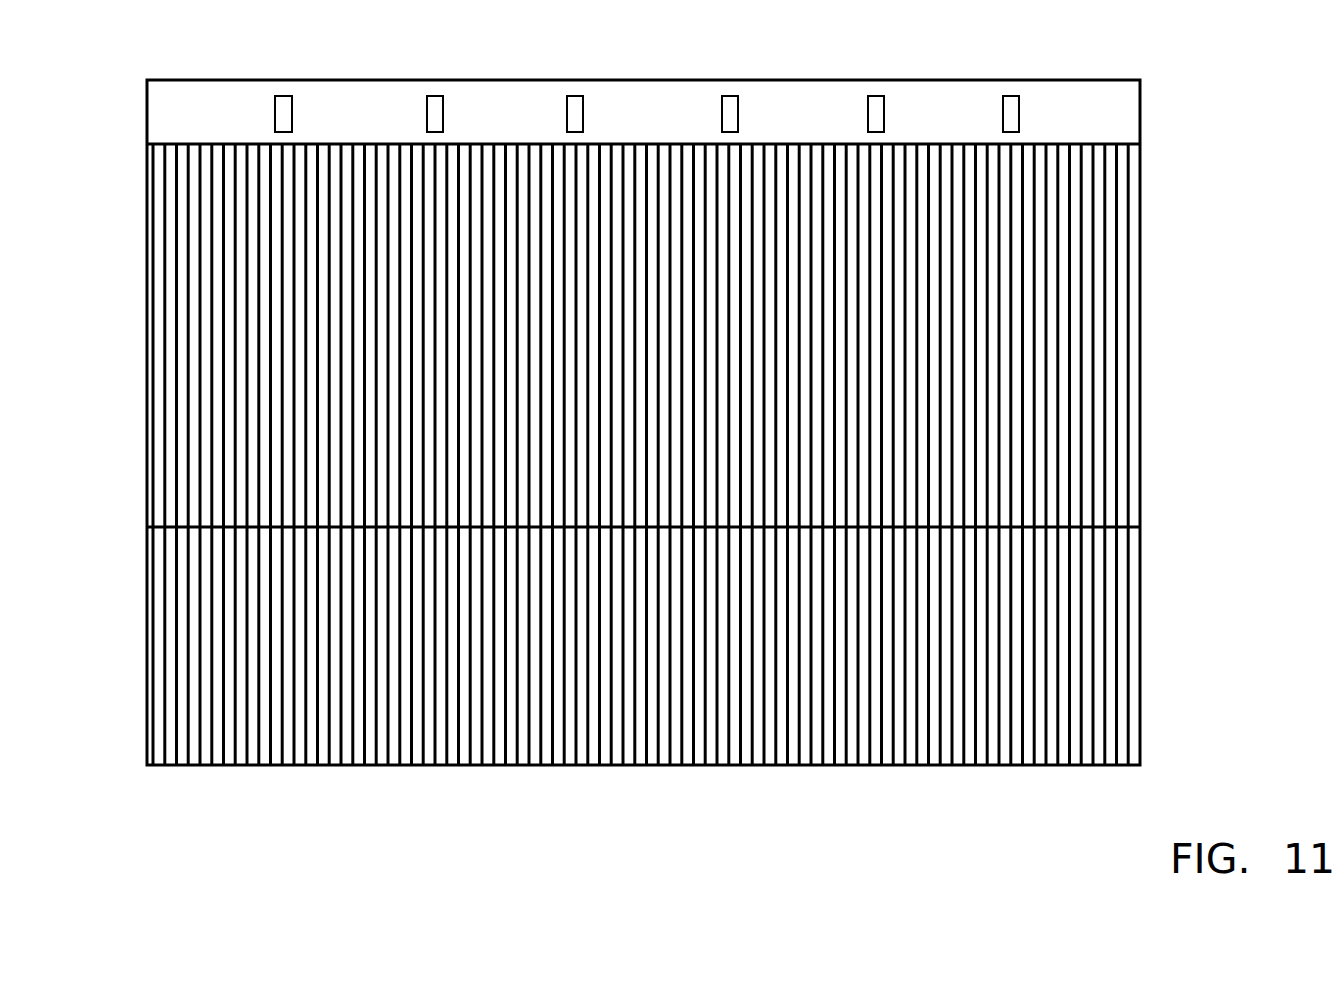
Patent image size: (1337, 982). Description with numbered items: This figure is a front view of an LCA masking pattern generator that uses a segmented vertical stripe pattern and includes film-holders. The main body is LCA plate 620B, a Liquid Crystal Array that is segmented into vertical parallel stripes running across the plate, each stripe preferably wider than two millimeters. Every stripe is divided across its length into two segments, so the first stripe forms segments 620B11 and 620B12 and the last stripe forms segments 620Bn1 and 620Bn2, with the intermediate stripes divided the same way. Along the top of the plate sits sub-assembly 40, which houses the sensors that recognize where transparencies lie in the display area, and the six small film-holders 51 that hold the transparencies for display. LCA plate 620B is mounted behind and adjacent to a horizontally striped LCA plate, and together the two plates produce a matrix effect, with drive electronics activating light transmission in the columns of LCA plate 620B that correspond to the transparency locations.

The sub-assembly 40 is at (161, 130).
The film-holders 51 is at (290, 96).
The LCA plate 620B is at (150, 247).
The first segment of first vertical stripe 620B11 is at (152, 156).
The second segment of first vertical stripe 620B12 is at (153, 602).
The first segment of n-th vertical stripe 620Bn1 is at (1128, 150).
The second segment of n-th vertical stripe 620Bn2 is at (1128, 595).